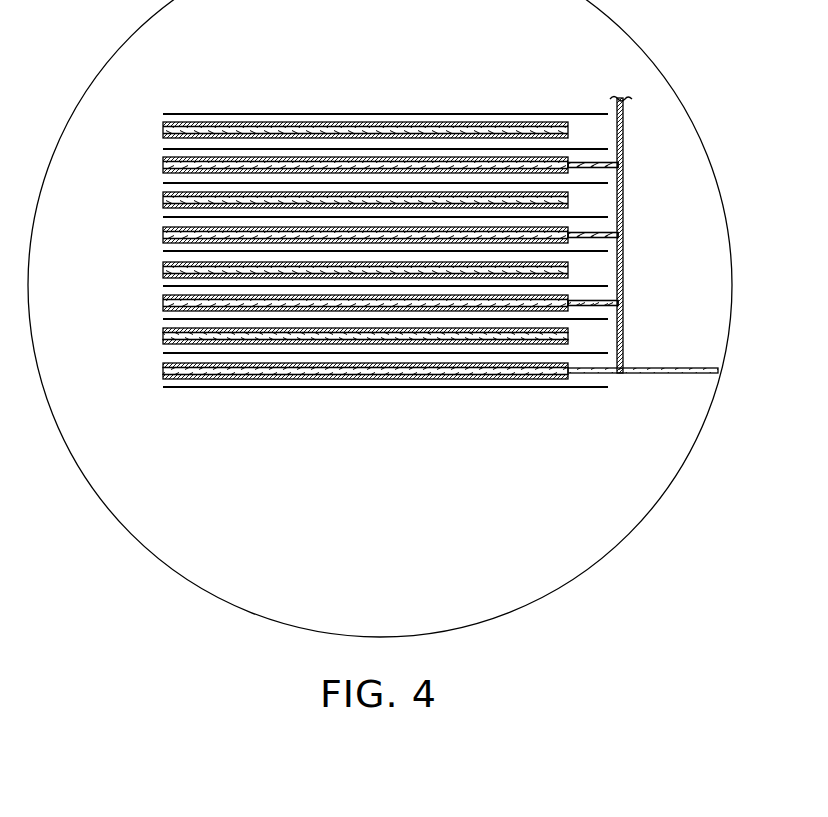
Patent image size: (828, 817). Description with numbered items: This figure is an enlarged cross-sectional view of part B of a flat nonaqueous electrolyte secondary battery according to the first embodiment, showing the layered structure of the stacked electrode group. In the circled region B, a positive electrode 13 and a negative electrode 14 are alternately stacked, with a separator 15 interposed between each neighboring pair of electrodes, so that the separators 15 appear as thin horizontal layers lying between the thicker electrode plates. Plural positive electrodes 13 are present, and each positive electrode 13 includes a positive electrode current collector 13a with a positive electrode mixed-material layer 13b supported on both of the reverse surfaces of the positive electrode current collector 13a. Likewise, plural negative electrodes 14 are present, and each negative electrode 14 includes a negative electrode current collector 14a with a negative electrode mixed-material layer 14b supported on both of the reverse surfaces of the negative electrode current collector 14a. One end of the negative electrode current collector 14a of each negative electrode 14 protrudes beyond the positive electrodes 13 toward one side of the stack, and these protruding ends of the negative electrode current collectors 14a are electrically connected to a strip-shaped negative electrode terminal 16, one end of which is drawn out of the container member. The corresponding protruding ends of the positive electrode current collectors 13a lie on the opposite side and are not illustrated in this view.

The positive electrode 13 is at (75, 395).
The positive electrode current collector 13a is at (175, 338).
The positive electrode mixed-material layer 13b is at (165, 330).
The negative electrode 14 is at (146, 475).
The negative electrode current collector 14a is at (168, 372).
The negative electrode mixed-material layer 14b is at (165, 365).
The separator 15 is at (443, 113).
The negative electrode terminal 16 is at (670, 373).
The part B is at (620, 542).